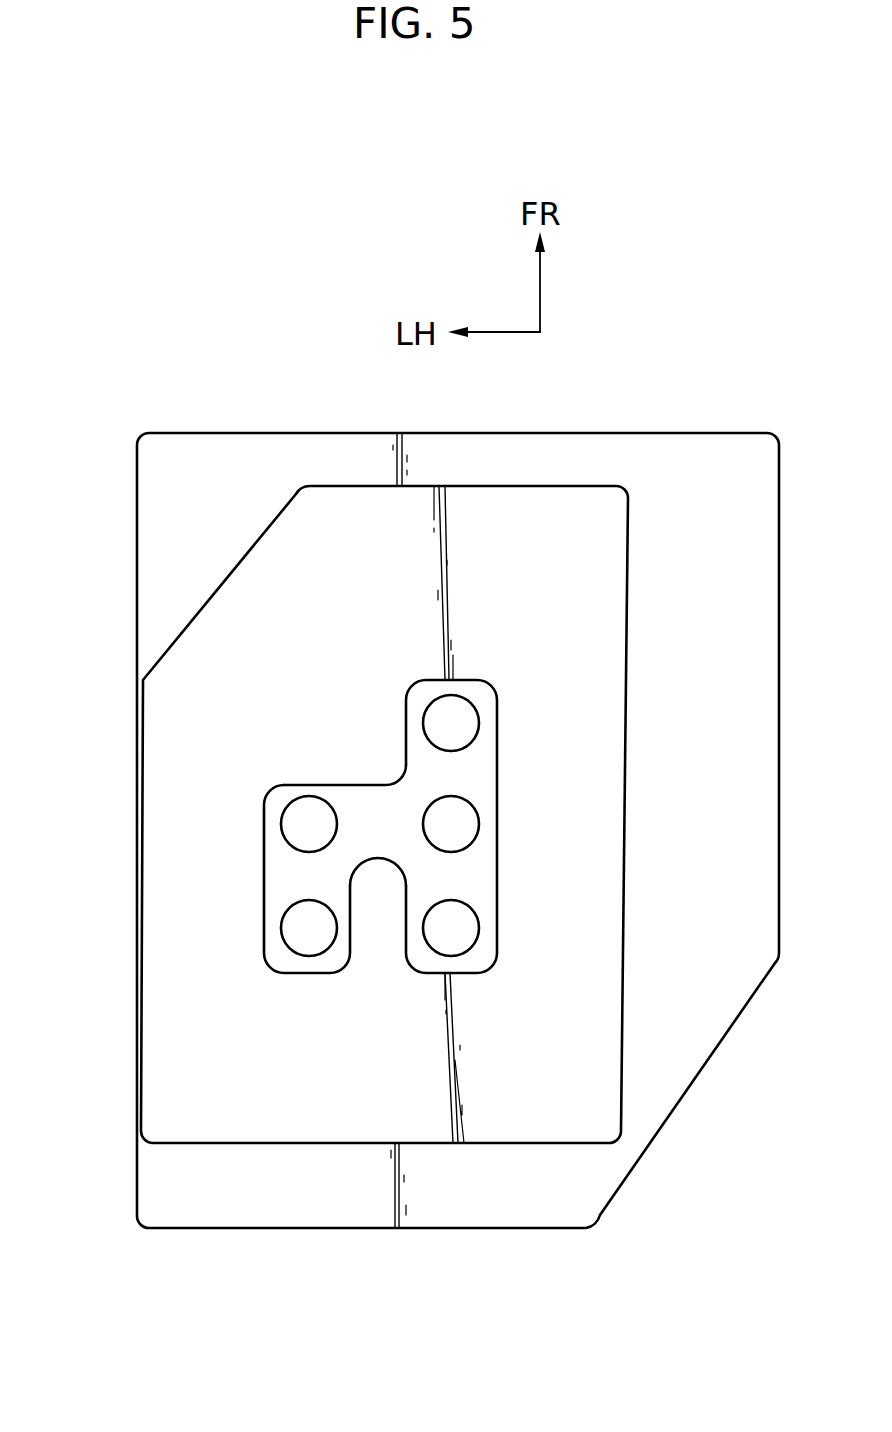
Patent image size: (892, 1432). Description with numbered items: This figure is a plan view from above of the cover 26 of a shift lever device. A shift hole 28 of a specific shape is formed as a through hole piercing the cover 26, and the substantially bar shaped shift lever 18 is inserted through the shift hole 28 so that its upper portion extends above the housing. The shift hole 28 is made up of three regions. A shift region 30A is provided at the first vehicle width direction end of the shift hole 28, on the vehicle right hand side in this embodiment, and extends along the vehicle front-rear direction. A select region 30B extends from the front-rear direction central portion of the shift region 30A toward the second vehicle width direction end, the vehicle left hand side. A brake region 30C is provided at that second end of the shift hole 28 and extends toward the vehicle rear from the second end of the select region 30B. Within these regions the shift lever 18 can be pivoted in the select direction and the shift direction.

The cover 26 is at (143, 497).
The shift hole 28 is at (497, 760).
The shift lever 18 is at (282, 823).
The shift region 30A is at (453, 880).
The select region 30B is at (378, 823).
The brake region 30C is at (308, 877).